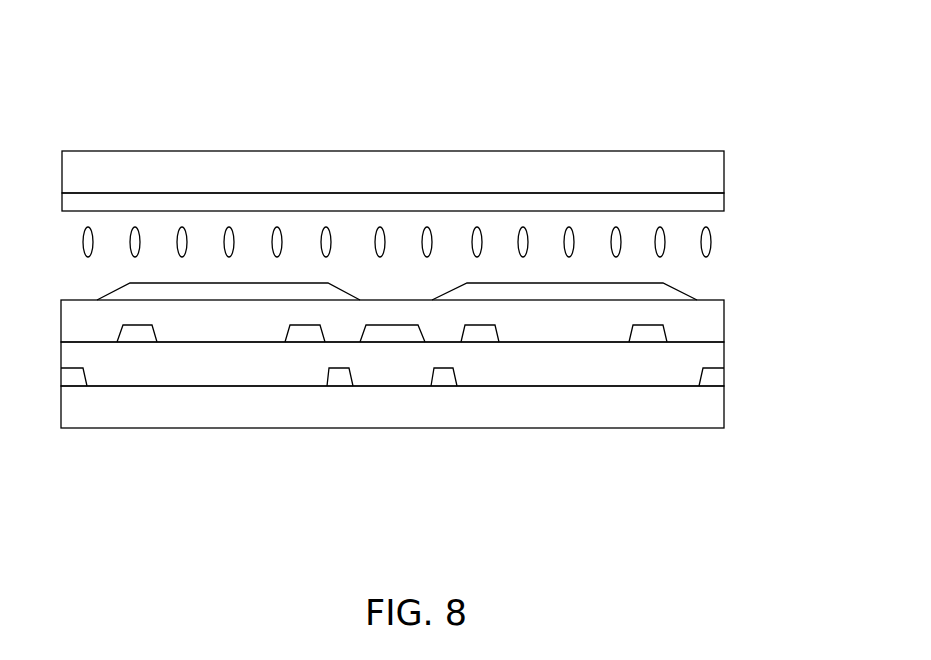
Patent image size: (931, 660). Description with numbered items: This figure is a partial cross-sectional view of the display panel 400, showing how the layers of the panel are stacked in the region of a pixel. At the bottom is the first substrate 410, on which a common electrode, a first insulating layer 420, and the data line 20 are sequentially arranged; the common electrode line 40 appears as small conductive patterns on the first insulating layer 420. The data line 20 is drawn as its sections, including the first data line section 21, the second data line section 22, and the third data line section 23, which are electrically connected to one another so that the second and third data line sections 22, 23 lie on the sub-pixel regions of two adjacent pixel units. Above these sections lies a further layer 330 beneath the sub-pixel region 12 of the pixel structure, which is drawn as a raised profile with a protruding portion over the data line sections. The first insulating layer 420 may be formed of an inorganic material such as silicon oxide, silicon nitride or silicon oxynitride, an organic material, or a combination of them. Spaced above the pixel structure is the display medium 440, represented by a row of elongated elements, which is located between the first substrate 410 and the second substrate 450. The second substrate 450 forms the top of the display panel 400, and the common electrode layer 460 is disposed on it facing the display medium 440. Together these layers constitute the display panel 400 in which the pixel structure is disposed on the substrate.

The display panel 400 is at (152, 92).
The second substrate 450 is at (718, 173).
The common electrode layer 460 is at (718, 201).
The display medium 440 is at (706, 245).
The sub-pixel region 12 is at (122, 294).
The planarization layer 330 is at (716, 321).
The first insulating layer 420 is at (714, 362).
The common electrode line 40 is at (712, 380).
The first substrate 410 is at (716, 421).
The data line 20 is at (392, 413).
The first data line section 21 is at (390, 333).
The second data line section 22 is at (303, 333).
The third data line section 23 is at (480, 396).